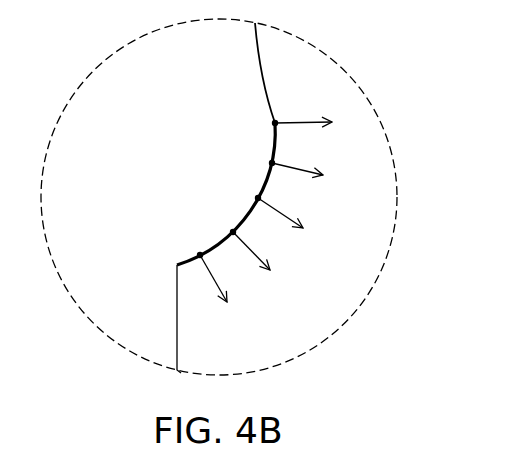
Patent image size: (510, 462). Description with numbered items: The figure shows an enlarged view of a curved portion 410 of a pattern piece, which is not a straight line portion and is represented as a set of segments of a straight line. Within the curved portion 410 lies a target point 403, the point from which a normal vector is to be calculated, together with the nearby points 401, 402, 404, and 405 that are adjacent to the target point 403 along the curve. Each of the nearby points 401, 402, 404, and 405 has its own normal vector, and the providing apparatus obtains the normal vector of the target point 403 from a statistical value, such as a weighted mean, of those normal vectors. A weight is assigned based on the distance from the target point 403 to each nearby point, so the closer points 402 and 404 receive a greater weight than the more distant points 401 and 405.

The curved portion 410 is at (331, 56).
The nearby point 401 is at (200, 255).
The nearby point 402 is at (233, 232).
The target point 403 is at (258, 198).
The nearby point 404 is at (272, 163).
The nearby point 405 is at (275, 123).